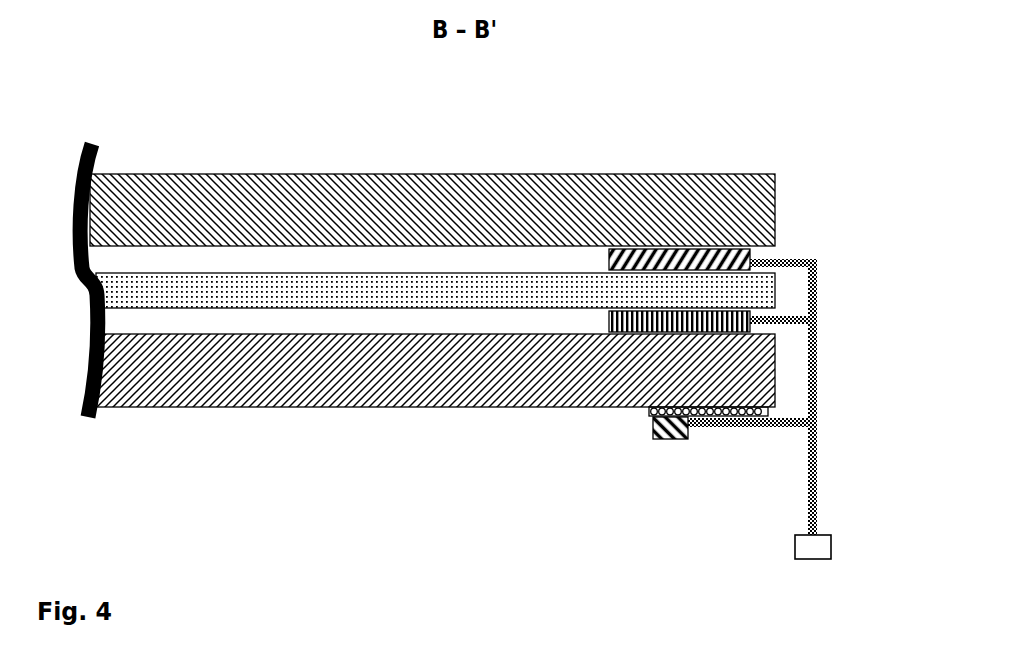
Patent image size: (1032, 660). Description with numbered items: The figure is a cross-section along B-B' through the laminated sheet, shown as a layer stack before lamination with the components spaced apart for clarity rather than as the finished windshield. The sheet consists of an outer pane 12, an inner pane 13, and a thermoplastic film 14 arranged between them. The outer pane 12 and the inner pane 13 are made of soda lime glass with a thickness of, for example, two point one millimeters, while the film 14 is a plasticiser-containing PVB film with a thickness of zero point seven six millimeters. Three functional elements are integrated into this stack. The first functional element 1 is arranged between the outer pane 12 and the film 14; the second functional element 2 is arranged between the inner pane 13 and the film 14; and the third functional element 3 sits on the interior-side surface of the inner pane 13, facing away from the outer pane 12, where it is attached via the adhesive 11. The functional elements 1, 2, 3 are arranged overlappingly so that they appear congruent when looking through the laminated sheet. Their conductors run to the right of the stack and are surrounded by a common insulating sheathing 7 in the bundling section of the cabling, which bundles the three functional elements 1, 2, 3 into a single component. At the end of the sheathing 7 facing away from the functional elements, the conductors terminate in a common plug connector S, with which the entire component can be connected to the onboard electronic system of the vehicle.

The outer pane 12 is at (170, 190).
The thermoplastic film 14 is at (372, 285).
The inner pane 13 is at (219, 395).
The first functional element 1 is at (713, 257).
The second functional element 2 is at (627, 330).
The adhesive 11 is at (653, 410).
The third functional element 3 is at (672, 424).
The insulating sheathing 7 is at (817, 453).
The plug connector S is at (820, 546).